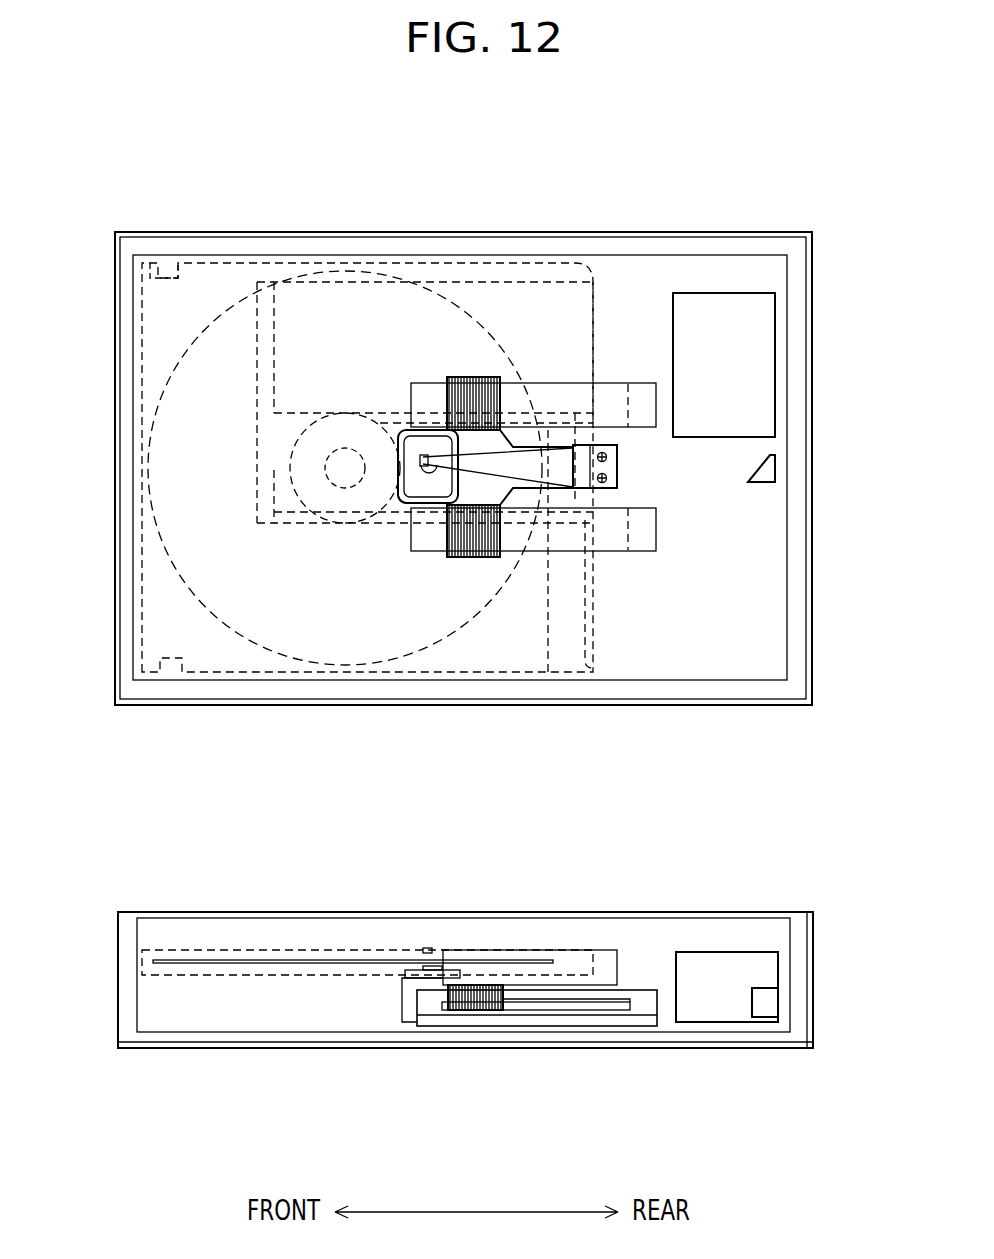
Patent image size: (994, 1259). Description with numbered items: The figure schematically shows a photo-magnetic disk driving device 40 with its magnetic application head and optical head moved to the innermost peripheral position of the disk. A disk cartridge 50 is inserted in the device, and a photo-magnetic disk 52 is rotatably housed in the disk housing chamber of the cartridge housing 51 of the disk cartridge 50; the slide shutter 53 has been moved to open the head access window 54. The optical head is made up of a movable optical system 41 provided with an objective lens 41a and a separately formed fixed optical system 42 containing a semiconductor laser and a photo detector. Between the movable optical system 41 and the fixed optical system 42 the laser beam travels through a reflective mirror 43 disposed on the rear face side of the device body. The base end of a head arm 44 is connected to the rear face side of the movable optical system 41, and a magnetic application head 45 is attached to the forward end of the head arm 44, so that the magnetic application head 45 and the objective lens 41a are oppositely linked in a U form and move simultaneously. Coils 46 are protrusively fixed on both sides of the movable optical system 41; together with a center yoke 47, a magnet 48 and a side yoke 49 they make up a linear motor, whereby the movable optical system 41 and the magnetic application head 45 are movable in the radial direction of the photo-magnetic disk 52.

The photo-magnetic disk driving device 40 is at (598, 232).
The movable optical system 41 is at (490, 487).
The objective lens 41a is at (415, 500).
The fixed optical system 42 is at (757, 332).
The reflective mirror 43 is at (773, 470).
The head arm 44 is at (522, 467).
The magnetic application head 45 is at (420, 457).
The coils 46 is at (470, 377).
The center yoke 47 is at (647, 1022).
The magnet 48 is at (558, 1010).
The side yoke 49 is at (640, 395).
The disk cartridge 50 is at (140, 345).
The cartridge housing 51 is at (168, 315).
The photo-magnetic disk 52 is at (105, 1008).
The slide shutter 53 is at (595, 315).
The head access window 54 is at (393, 507).